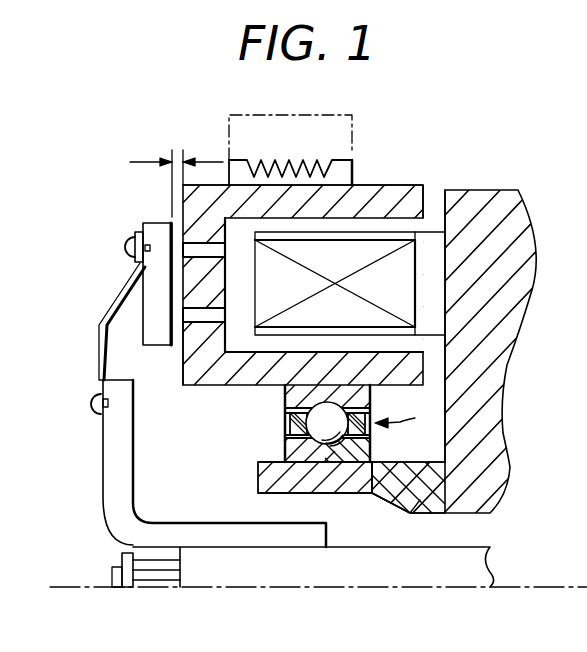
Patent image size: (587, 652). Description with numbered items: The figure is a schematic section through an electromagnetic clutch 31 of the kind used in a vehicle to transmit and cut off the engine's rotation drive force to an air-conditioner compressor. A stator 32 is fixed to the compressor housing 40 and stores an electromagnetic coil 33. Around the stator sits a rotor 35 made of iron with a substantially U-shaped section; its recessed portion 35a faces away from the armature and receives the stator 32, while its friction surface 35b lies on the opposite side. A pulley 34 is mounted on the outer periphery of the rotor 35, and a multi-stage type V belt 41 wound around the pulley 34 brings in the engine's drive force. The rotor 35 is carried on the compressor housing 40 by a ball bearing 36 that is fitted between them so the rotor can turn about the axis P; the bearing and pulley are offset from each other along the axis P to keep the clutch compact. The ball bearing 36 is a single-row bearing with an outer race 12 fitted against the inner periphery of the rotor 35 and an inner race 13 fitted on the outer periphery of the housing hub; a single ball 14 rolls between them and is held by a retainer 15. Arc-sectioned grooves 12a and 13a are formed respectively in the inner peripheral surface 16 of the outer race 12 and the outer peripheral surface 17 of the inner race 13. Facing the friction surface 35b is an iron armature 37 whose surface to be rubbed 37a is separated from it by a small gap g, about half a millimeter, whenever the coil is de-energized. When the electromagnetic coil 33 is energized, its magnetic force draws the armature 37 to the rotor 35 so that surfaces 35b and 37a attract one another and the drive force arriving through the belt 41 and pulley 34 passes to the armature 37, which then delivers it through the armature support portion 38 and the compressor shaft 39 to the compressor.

The outer race 12 is at (297, 396).
The groove 12a is at (411, 513).
The inner race 13 is at (265, 470).
The groove 13a is at (318, 458).
The ball 14 is at (300, 450).
The retainer 15 is at (317, 430).
The inner peripheral surface 16 is at (372, 408).
The outer peripheral surface 17 is at (370, 437).
The electromagnetic clutch 31 is at (505, 360).
The stator 32 is at (438, 303).
The electromagnetic coil 33 is at (410, 263).
The pulley 34 is at (340, 172).
The rotor 35 is at (427, 208).
The recessed portion 35a is at (400, 227).
The friction surface 35b is at (178, 296).
The ball bearing 36 is at (408, 414).
The armature 37 is at (155, 234).
The surface to be rubbed 37a is at (177, 272).
The armature support portion 38 is at (108, 318).
The compressor shaft 39 is at (482, 565).
The compressor housing 40 is at (500, 483).
The multi-stage type V belt 41 is at (355, 150).
The axis P is at (130, 594).
The gap g is at (176, 170).